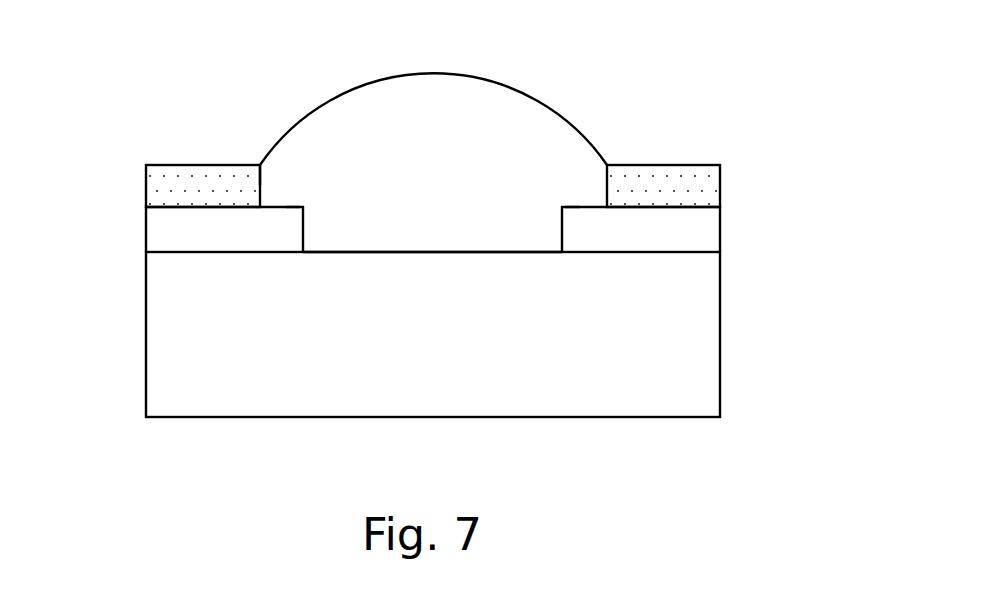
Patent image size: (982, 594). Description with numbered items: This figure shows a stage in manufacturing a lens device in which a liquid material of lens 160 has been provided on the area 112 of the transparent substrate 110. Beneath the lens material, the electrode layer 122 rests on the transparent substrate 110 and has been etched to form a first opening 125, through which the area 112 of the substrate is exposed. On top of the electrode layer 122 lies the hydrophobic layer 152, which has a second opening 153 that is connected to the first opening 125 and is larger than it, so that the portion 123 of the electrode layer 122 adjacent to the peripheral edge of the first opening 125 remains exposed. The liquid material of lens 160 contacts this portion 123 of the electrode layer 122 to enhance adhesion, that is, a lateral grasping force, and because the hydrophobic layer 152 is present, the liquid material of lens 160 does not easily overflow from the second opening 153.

The transparent substrate 110 is at (707, 332).
The area 112 is at (367, 253).
The electrode layer 122 is at (160, 232).
The portion of the electrode layer 123 is at (295, 192).
The first opening 125 is at (390, 222).
The hydrophobic layer 152 is at (160, 189).
The second opening 153 is at (274, 169).
The liquid material of lens 160 is at (447, 71).